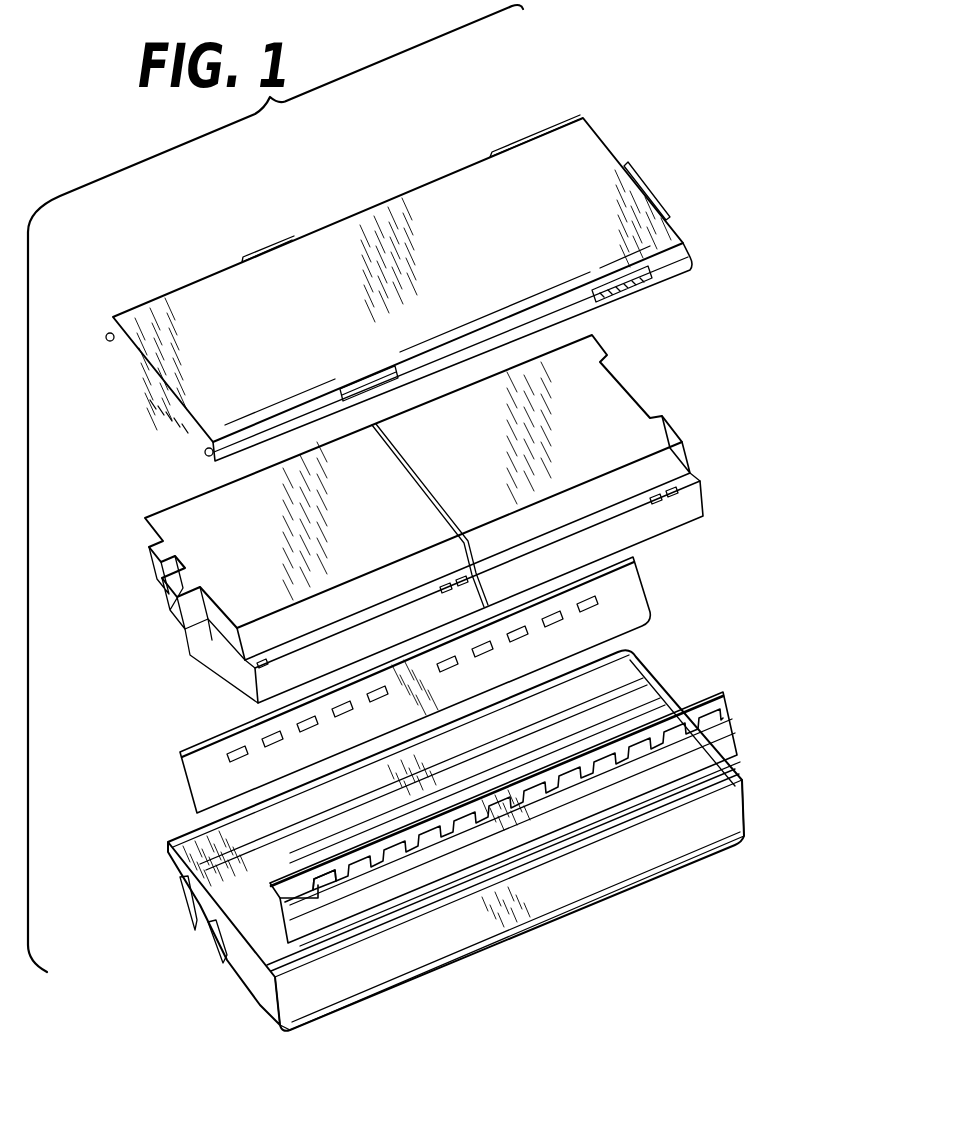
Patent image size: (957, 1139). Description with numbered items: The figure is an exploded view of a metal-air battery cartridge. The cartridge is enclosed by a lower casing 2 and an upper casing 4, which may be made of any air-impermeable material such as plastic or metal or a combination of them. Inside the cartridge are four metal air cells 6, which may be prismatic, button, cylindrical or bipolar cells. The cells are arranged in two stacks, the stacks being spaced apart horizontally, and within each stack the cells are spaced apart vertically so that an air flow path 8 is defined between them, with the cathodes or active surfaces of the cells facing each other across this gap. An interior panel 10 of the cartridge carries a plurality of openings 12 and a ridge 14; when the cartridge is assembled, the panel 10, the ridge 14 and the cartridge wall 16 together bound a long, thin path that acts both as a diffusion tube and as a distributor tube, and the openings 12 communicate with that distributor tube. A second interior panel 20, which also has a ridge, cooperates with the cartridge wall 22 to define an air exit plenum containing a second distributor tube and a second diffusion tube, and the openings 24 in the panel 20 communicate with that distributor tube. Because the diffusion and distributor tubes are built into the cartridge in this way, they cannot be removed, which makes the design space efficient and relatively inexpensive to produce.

The lower casing 2 is at (318, 272).
The upper casing 4 is at (417, 840).
The metal air cells 6 is at (602, 413).
The air flow path 8 is at (633, 502).
The interior panel 10 is at (553, 880).
The openings 12 is at (323, 885).
The ridge 14 is at (700, 738).
The cartridge wall 16 is at (398, 955).
The interior panel 20 is at (366, 686).
The cartridge wall 22 is at (217, 847).
The openings 24 is at (232, 752).